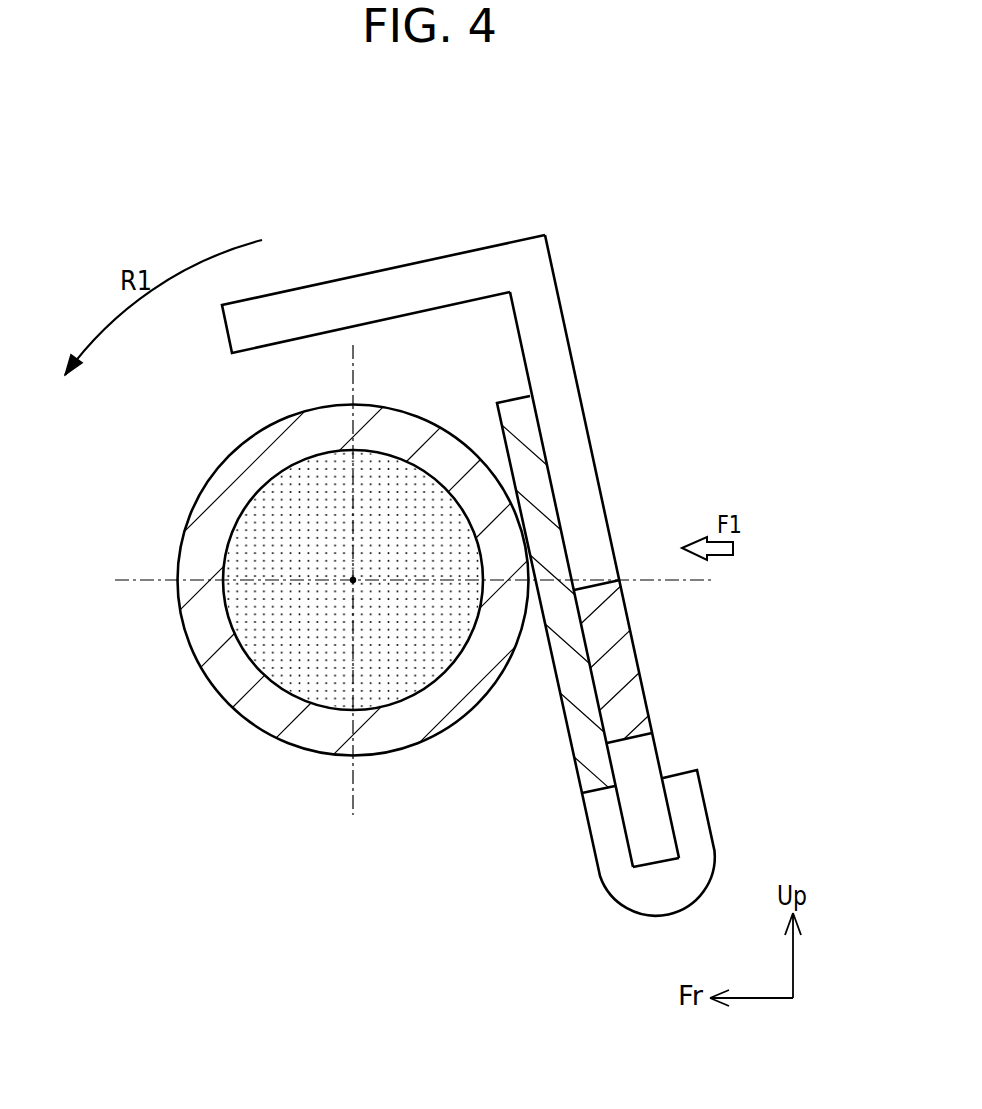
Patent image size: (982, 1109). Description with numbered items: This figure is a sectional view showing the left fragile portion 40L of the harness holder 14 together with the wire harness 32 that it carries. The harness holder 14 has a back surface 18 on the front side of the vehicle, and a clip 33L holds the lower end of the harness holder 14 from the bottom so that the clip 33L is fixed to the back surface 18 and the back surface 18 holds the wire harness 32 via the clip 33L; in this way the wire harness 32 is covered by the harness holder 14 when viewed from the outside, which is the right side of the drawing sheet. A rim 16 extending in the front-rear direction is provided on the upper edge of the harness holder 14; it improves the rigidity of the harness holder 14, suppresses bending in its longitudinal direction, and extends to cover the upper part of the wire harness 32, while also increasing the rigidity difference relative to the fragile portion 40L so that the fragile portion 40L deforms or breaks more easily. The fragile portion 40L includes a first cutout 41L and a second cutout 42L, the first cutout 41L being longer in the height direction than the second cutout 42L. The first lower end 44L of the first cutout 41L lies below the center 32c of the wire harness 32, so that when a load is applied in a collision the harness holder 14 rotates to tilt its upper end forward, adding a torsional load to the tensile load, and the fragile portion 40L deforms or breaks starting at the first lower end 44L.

The harness holder 14 is at (637, 187).
The rim 16 is at (377, 283).
The back surface 18 is at (595, 695).
The wire harness 32 is at (262, 715).
The center of the wire harness 32c is at (353, 582).
The clip 33L is at (580, 743).
The left fragile portion 40L is at (697, 612).
The first cutout 41L is at (570, 427).
The second cutout 42L is at (638, 758).
The first lower end 44L is at (597, 578).